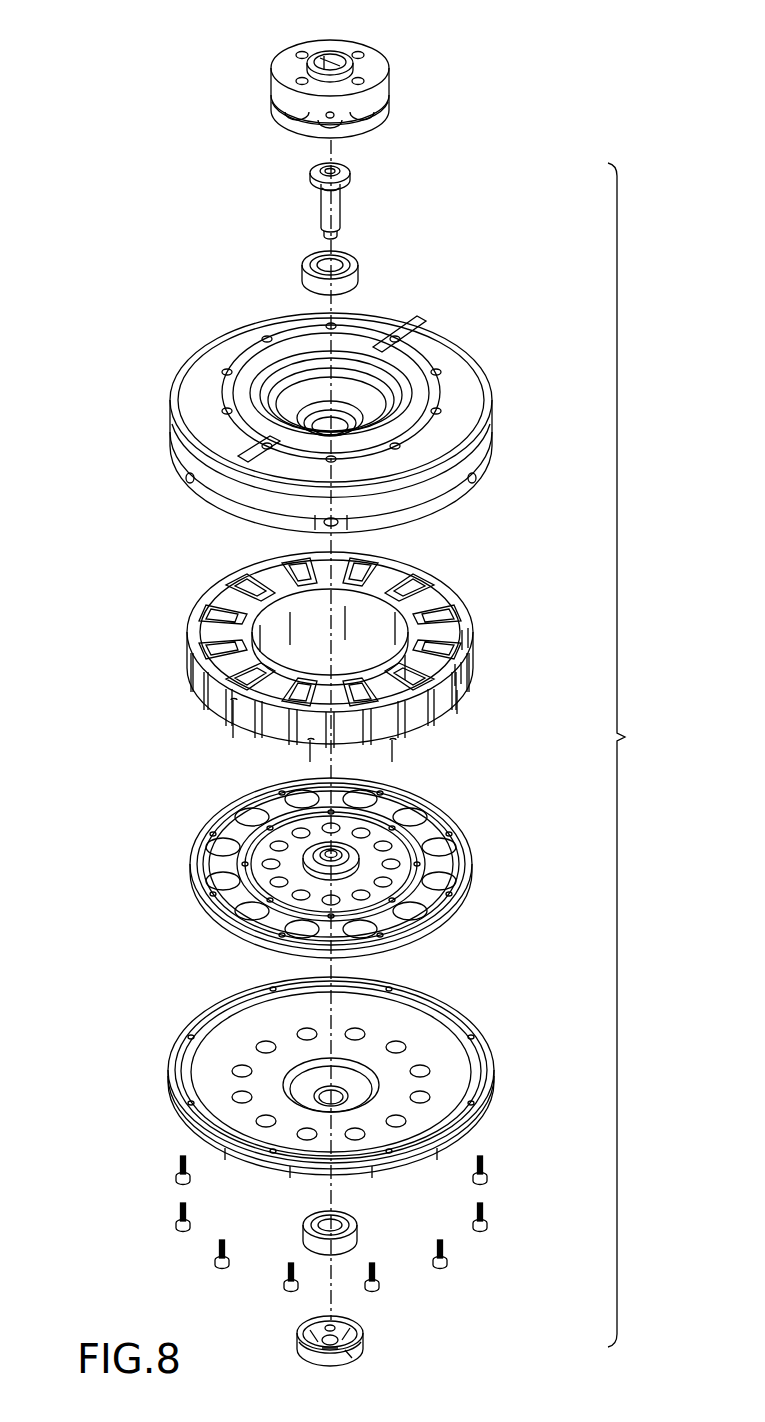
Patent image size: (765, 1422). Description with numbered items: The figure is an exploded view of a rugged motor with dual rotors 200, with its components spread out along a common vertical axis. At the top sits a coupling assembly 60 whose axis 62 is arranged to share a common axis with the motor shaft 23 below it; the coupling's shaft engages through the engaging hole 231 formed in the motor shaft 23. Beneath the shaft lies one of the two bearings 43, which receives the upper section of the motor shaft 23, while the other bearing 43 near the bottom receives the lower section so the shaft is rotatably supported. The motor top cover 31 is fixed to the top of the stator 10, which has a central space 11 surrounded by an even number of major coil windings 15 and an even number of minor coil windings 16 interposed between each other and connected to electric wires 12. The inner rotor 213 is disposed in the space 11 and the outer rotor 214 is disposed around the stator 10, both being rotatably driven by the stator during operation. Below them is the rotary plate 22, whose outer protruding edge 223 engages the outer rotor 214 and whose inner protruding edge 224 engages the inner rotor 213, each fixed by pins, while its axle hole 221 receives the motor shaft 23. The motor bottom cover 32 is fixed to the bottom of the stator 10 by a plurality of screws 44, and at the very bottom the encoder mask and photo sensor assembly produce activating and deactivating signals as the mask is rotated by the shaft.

The rugged motor with dual rotors 200 is at (641, 755).
The coupling assembly 60 is at (392, 50).
The axis 62 is at (334, 60).
The motor shaft 23 is at (340, 210).
The engaging hole 231 is at (338, 170).
The bearings 43 is at (350, 271).
The motor top cover 31 is at (440, 362).
The stator 10 is at (388, 651).
The electric wires 12 is at (412, 572).
The major coil windings 15 is at (445, 600).
The minor coil windings 16 is at (453, 605).
The inner rotor 213 is at (455, 633).
The outer rotor 214 is at (462, 675).
The space 11 is at (360, 652).
The rotary plate 22 is at (377, 860).
The axle hole 221 is at (340, 852).
The outer protruding edge 223 is at (468, 862).
The inner protruding edge 224 is at (400, 882).
The motor bottom cover 32 is at (450, 1033).
The screws 44 is at (488, 1160).